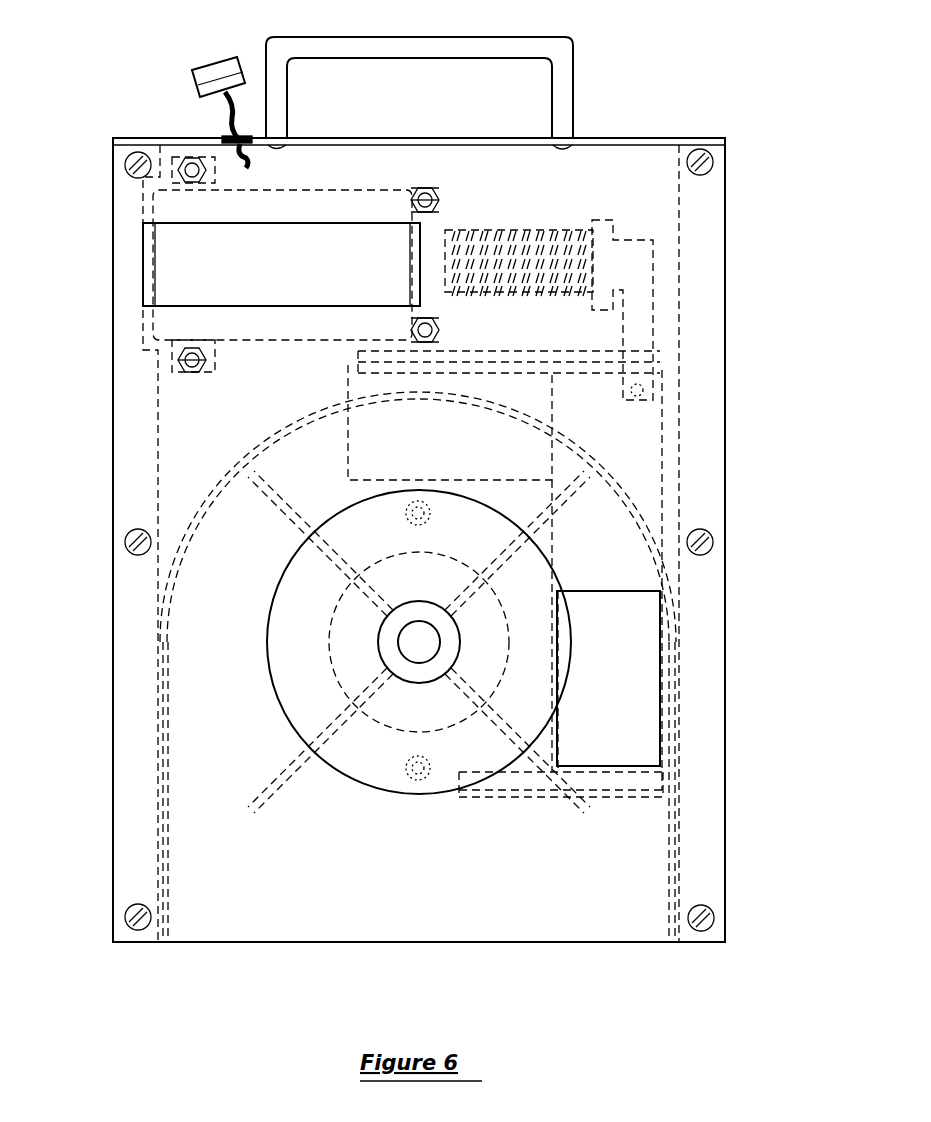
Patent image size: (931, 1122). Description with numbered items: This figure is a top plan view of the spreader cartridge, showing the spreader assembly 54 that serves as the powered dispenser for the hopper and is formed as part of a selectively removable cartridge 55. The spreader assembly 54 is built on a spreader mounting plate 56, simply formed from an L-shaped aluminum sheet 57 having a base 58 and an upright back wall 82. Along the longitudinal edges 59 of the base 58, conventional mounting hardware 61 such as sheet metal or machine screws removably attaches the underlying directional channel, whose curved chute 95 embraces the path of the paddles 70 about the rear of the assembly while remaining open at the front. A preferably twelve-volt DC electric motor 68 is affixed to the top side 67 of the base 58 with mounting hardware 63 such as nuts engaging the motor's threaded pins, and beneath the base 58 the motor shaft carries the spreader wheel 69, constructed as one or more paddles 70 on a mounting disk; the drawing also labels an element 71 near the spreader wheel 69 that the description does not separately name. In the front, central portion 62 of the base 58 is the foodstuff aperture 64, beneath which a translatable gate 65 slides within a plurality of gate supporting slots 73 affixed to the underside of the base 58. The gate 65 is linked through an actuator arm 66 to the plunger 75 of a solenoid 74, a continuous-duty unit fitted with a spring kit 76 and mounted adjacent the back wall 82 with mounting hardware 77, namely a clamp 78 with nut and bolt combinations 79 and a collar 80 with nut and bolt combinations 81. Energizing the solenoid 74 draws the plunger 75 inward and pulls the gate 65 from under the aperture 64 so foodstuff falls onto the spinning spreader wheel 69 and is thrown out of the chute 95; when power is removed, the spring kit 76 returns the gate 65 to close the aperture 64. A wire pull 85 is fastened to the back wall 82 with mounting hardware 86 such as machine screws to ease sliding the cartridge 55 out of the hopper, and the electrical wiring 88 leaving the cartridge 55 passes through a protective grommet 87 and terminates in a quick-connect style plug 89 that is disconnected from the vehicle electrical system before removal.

The spreader assembly 54 is at (692, 94).
The cartridge 55 is at (118, 971).
The spreader mounting plate 56 is at (705, 390).
The L-shaped aluminum sheet 57 is at (122, 402).
The base 58 is at (705, 812).
The longitudinal edges 59 is at (727, 482).
The mounting hardware 61 is at (714, 542).
The front, central portion 62 is at (218, 662).
The mounting hardware 63 is at (405, 513).
The foodstuff aperture 64 is at (607, 580).
The translatable gate 65 is at (450, 422).
The actuator arm 66 is at (636, 250).
The top side 67 is at (419, 894).
The electric motor 68 is at (296, 682).
The spreader wheel 69 is at (222, 803).
The paddles 70 is at (282, 772).
The fan rotor 71 is at (331, 606).
The gate supporting slots 73 is at (356, 352).
The solenoid 74 is at (292, 200).
The plunger 75 is at (484, 245).
The spring kit 76 is at (478, 292).
The mounting hardware 77 is at (181, 183).
The clamp 78 is at (210, 362).
The nut and bolt combinations 79 is at (186, 344).
The collar 80 is at (440, 212).
The nut and bolt combinations 81 is at (418, 200).
The back wall 82 is at (700, 137).
The wire pull 85 is at (370, 45).
The mounting hardware 86 is at (562, 150).
The grommet 87 is at (236, 136).
The electrical wiring 88 is at (255, 118).
The quick-connect style plug 89 is at (228, 70).
The curved chute 95 is at (575, 437).